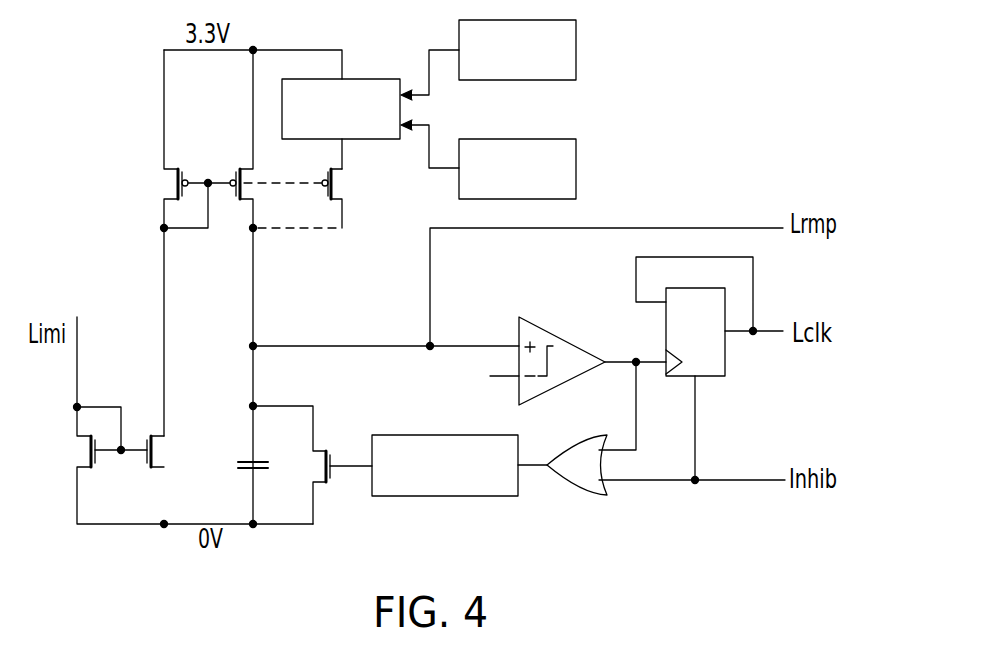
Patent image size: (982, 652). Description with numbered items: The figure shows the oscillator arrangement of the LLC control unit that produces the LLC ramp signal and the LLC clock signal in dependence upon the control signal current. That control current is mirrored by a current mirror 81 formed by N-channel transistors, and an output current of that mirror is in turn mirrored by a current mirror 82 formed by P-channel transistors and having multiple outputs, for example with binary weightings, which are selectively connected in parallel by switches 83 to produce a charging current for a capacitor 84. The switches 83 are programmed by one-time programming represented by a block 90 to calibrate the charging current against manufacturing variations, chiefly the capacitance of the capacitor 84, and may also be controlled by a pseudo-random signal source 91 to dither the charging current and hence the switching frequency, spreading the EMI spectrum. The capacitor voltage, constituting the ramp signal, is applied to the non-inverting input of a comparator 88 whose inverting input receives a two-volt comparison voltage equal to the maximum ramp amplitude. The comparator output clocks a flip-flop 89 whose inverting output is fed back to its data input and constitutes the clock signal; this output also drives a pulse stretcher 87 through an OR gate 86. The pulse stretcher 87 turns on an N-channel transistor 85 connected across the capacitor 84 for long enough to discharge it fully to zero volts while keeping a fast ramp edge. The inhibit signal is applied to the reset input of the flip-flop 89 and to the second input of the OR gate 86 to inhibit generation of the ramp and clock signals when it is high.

The current mirror 81 is at (135, 510).
The current mirror 82 is at (222, 154).
The switches 83 is at (353, 133).
The capacitor 84 is at (238, 466).
The N-channel transistor 85 is at (314, 466).
The OR gate 86 is at (587, 488).
The pulse stretcher 87 is at (388, 445).
The comparator 88 is at (549, 332).
The flip-flop 89 is at (720, 365).
The one-time programming block 90 is at (572, 52).
The pseudo-random signal source 91 is at (567, 163).